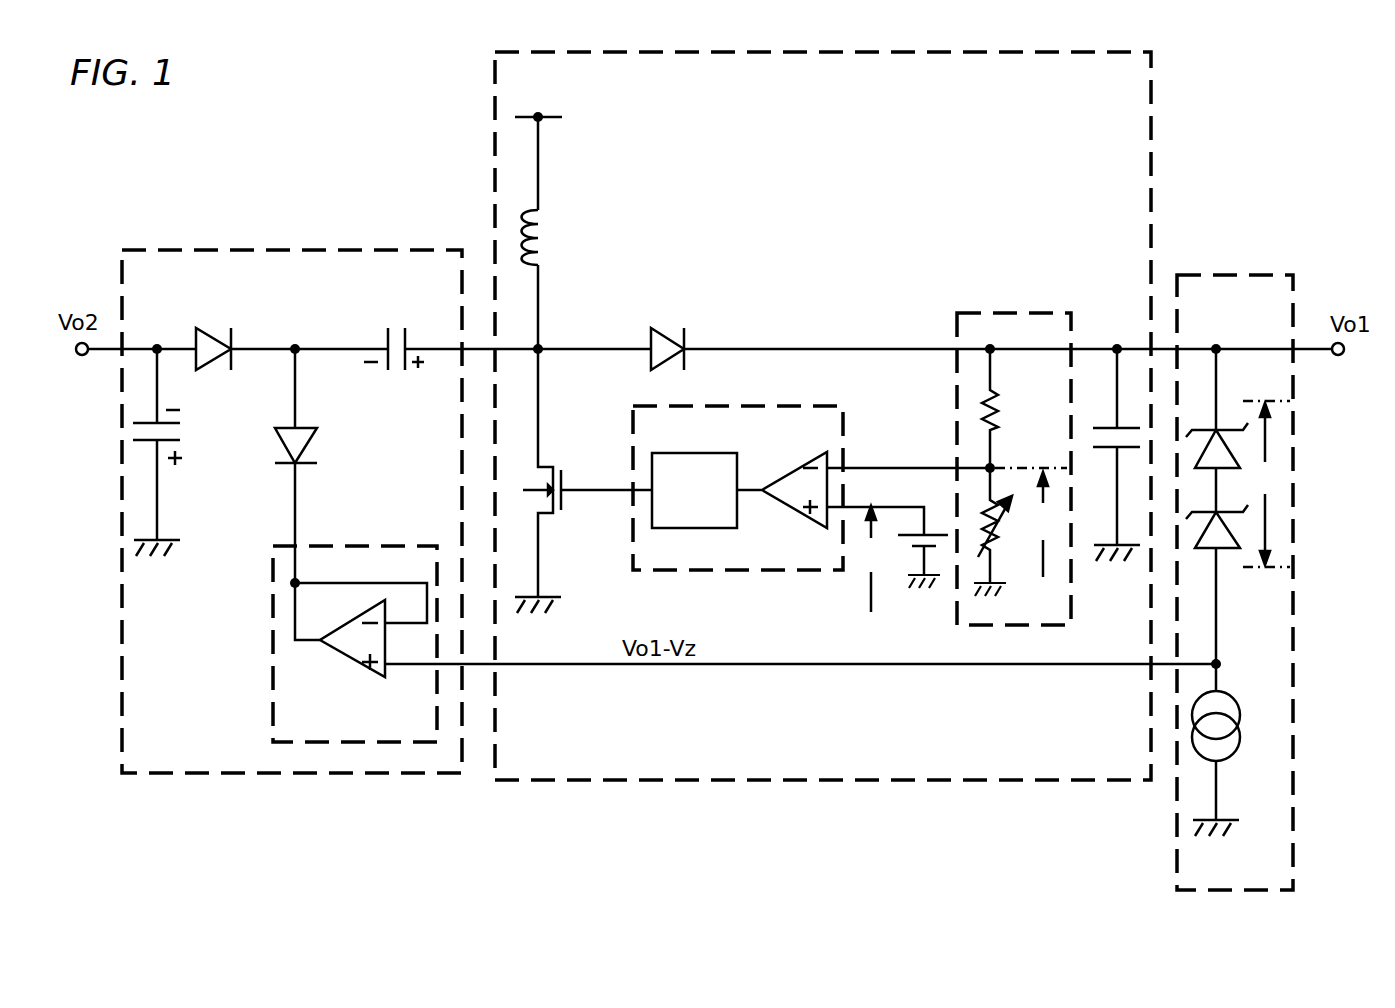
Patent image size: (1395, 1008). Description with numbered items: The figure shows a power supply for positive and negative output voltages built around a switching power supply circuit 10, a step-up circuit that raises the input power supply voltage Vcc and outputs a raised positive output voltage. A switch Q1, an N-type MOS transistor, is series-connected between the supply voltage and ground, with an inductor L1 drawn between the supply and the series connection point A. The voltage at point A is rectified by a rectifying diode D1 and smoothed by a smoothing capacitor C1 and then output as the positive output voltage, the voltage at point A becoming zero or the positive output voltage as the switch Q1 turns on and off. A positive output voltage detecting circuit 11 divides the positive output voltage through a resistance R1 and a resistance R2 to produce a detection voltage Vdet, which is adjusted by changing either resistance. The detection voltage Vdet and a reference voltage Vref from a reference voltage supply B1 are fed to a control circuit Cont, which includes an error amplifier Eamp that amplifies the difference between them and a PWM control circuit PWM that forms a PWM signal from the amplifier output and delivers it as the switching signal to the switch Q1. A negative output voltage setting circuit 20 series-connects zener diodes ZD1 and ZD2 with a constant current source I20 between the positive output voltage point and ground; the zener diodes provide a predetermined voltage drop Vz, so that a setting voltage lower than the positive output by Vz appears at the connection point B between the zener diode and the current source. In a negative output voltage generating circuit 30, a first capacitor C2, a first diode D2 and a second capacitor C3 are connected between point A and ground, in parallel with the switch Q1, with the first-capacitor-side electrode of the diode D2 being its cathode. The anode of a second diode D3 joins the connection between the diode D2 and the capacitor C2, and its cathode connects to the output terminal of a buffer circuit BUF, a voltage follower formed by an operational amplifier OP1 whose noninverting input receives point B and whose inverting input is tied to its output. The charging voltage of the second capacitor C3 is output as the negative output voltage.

The switching power supply circuit 10 is at (1151, 97).
The positive output voltage detecting circuit 11 is at (970, 313).
The negative output voltage setting circuit 20 is at (1205, 275).
The negative output voltage generating circuit 30 is at (240, 250).
The inductor L1 is at (558, 279).
The rectifying diode D1 is at (670, 329).
The switch Q1 is at (583, 481).
The control circuit Cont is at (755, 406).
The PWM control circuit PWM is at (657, 453).
The error amplifier Eamp is at (786, 477).
The reference voltage Vref is at (869, 559).
The reference voltage supply B1 is at (906, 562).
The resistance R1 is at (1009, 408).
The resistance R2 is at (1003, 532).
The detection voltage Vdet is at (1042, 524).
The smoothing capacitor C1 is at (1109, 455).
The zener diode ZD1 is at (1226, 428).
The zener diode ZD2 is at (1225, 553).
The predetermined voltage drop Vz is at (1266, 484).
The constant current source I20 is at (1222, 765).
The connection point B is at (1228, 664).
The series connection point A is at (540, 347).
The power supply voltage Vcc is at (563, 158).
The first diode D2 is at (214, 326).
The second diode D3 is at (321, 494).
The first capacitor C2 is at (394, 326).
The second capacitor C3 is at (180, 452).
The buffer circuit BUF is at (273, 655).
The operational amplifier OP1 is at (345, 655).